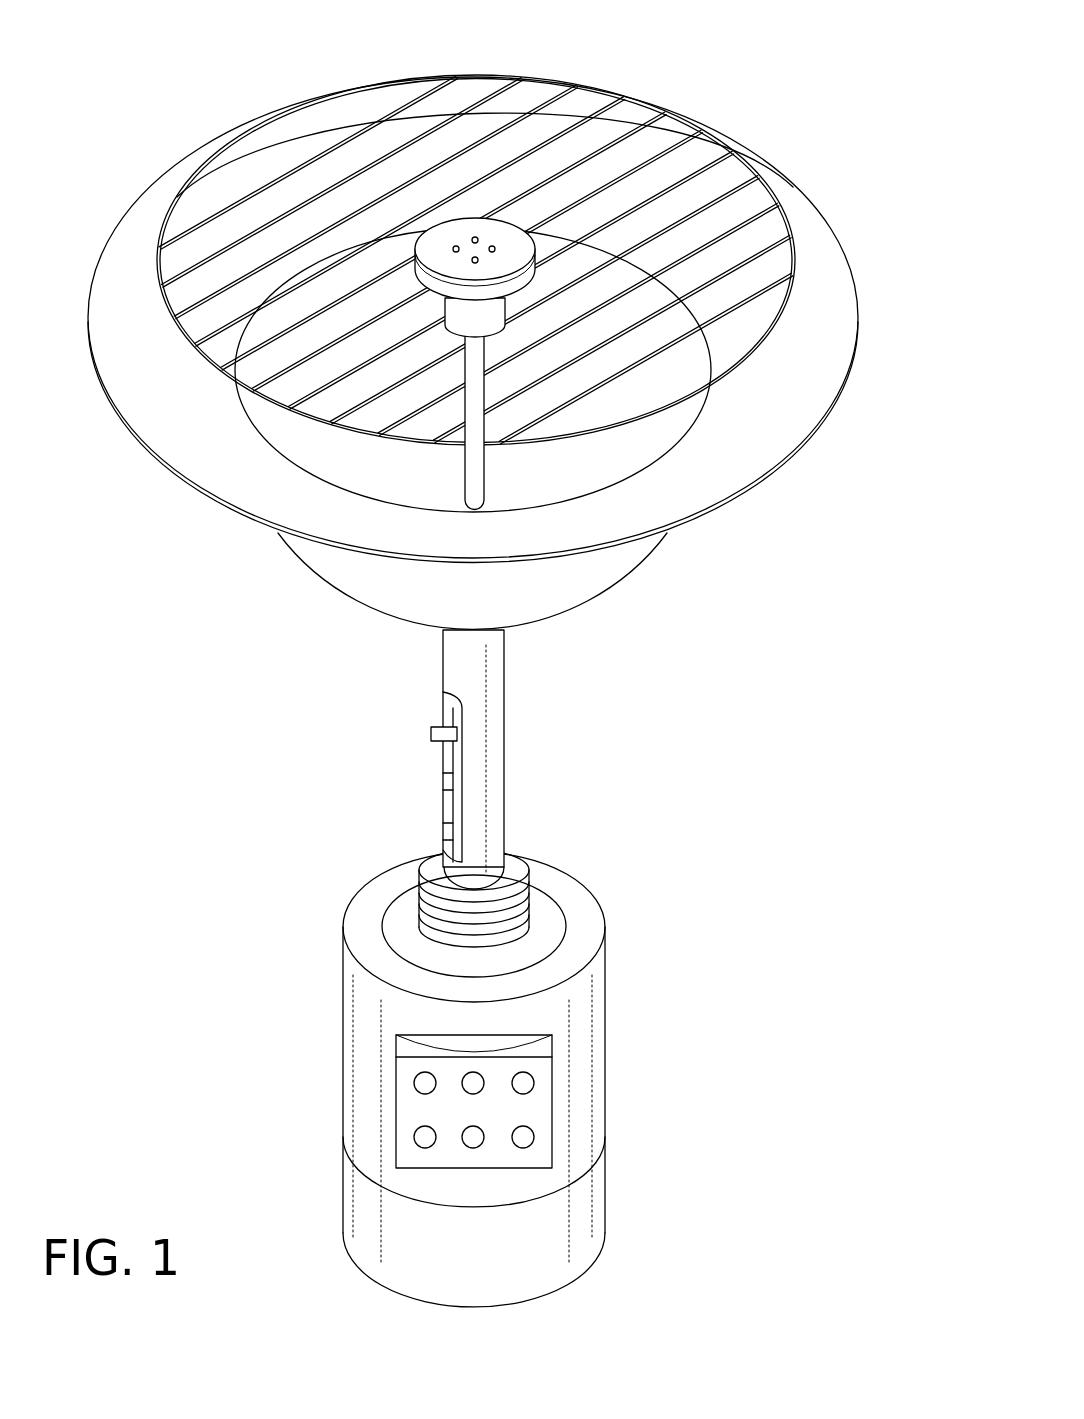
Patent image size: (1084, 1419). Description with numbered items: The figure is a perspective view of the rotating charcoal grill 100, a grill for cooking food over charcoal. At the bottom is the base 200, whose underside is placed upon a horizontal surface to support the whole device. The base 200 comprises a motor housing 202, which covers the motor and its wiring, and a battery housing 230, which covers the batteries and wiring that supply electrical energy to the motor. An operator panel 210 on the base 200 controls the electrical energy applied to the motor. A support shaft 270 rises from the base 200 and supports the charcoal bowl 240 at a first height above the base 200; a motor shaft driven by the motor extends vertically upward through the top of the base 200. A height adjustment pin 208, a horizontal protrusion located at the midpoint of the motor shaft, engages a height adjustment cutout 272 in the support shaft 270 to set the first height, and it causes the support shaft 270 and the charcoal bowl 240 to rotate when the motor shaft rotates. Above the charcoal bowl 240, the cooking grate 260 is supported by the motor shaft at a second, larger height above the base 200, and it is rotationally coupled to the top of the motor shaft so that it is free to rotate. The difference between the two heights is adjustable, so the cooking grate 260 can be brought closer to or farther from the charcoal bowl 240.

The rotating charcoal grill 100 is at (797, 104).
The base 200 is at (737, 1210).
The motor housing 202 is at (345, 1027).
The height adjustment pin 208 is at (430, 733).
The operator panel 210 is at (553, 1087).
The battery housing 230 is at (346, 1182).
The charcoal bowl 240 is at (628, 567).
The cooking grate 260 is at (350, 97).
The support shaft 270 is at (501, 687).
The height adjustment cutout 272 is at (457, 802).